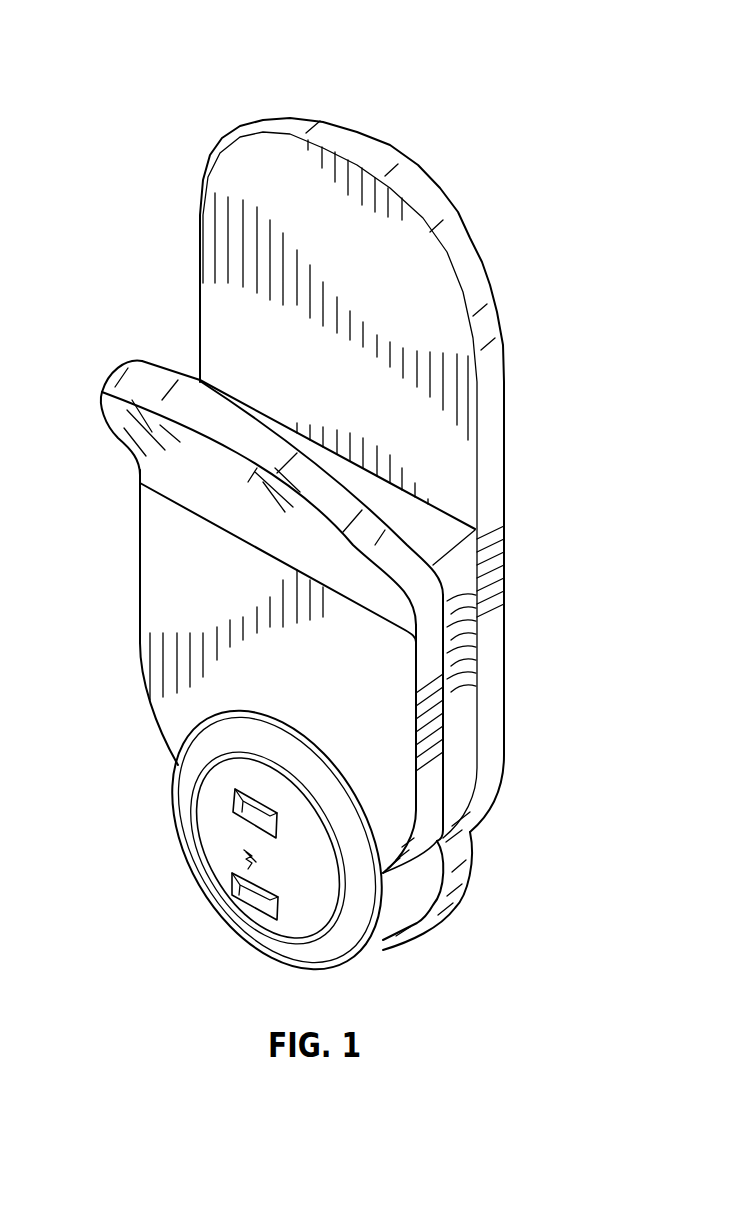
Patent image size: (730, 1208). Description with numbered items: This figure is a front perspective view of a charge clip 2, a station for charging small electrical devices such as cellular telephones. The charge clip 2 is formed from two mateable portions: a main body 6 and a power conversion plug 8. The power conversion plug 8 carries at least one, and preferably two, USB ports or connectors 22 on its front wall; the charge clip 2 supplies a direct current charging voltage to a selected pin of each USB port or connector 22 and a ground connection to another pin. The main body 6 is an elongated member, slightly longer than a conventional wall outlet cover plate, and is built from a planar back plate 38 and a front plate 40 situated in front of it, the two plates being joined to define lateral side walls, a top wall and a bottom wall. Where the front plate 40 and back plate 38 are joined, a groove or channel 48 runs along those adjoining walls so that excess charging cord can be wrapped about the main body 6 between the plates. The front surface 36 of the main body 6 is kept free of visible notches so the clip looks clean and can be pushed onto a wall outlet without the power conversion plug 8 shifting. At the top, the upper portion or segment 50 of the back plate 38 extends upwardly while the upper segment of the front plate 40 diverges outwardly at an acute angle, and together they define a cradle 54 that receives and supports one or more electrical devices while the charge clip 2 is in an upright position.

The charge clip 2 is at (117, 83).
The main body 6 is at (568, 463).
The power conversion plug 8 is at (215, 858).
The USB ports or connectors 22 is at (233, 813).
The front surface 36 is at (168, 713).
The back plate 38 is at (505, 399).
The front plate 40 is at (138, 522).
The groove or channel 48 is at (462, 737).
The upper portion or segment of the back plate 50 is at (472, 250).
The cradle 54 is at (167, 330).